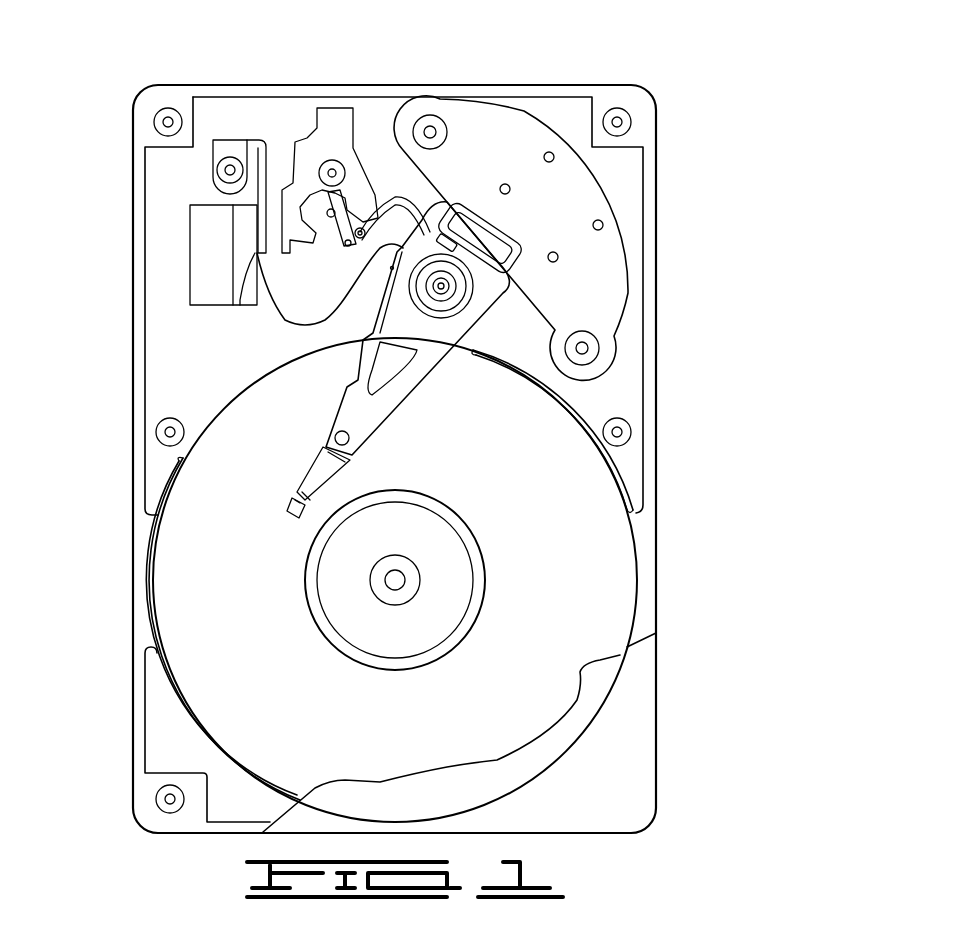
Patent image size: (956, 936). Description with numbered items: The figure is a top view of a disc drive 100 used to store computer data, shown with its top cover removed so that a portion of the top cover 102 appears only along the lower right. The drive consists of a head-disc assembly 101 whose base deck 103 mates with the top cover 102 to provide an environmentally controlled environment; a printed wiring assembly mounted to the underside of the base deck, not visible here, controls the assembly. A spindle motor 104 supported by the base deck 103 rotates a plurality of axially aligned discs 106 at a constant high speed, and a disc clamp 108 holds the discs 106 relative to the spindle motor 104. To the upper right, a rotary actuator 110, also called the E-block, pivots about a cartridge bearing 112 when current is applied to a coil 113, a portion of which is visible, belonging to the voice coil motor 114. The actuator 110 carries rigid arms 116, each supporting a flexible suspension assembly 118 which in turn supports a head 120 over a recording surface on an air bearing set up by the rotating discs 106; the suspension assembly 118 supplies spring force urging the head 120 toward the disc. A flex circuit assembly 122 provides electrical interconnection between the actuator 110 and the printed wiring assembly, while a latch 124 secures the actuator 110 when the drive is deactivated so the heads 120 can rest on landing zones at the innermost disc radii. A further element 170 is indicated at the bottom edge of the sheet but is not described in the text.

The disc drive 100 is at (205, 78).
The head-disc assembly 101 is at (150, 125).
The top cover 102 is at (613, 733).
The base deck 103 is at (203, 357).
The spindle motor 104 is at (397, 610).
The discs 106 is at (577, 647).
The disc clamp 108 is at (317, 613).
The rotary actuator 110 is at (425, 345).
The cartridge bearing 112 is at (447, 297).
The coil 113 is at (520, 265).
The voice coil motor 114 is at (470, 160).
The rigid arms 116 is at (348, 420).
The suspension assembly 118 is at (310, 482).
The head 120 is at (290, 505).
The flex circuit assembly 122 is at (285, 332).
The latch 124 is at (333, 123).
The connector 170 is at (550, 932).